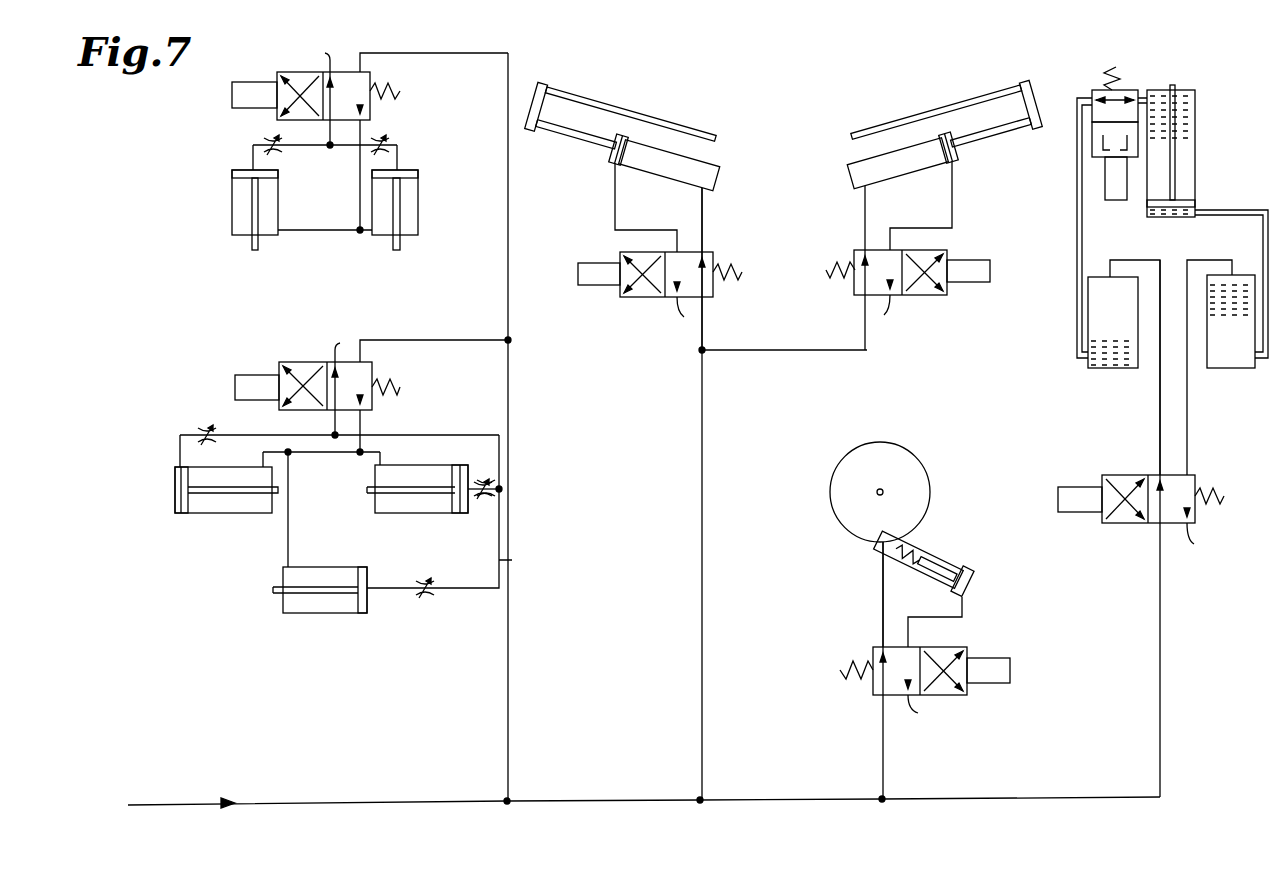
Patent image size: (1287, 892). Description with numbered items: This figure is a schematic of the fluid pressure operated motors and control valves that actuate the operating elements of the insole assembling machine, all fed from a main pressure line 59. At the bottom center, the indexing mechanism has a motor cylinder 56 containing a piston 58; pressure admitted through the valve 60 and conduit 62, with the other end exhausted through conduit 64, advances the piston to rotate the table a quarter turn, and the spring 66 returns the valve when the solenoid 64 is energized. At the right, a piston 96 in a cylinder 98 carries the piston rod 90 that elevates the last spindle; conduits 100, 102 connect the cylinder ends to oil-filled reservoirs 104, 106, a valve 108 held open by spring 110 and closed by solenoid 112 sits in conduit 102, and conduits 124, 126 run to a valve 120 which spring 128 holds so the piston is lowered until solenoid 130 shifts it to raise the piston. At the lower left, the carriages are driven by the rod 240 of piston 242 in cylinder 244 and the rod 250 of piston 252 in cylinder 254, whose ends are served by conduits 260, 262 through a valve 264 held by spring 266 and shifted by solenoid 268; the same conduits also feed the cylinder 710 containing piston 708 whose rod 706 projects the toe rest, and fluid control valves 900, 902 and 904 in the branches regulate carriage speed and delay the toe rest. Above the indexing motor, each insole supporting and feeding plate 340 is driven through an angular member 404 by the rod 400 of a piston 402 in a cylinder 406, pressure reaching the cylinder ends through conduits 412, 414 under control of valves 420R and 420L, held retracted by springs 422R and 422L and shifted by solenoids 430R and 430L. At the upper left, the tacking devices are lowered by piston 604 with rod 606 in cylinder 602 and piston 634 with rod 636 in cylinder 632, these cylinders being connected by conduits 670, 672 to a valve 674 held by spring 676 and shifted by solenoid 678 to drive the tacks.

The motor cylinder 56 is at (966, 517).
The piston 58 is at (978, 572).
The main pressure line 59 is at (508, 340).
The valve 60 is at (944, 697).
The conduit 62 is at (962, 615).
The conduit / solenoid 64 is at (1012, 668).
The spring 66 is at (840, 669).
The piston rod 90 is at (1176, 88).
The piston 96 is at (1190, 200).
The cylinder 98 is at (1195, 135).
The conduit 100 is at (1250, 216).
The conduit 102 is at (1077, 256).
The reservoir 104 is at (1236, 368).
The reservoir 106 is at (1112, 370).
The valve 108 is at (1097, 90).
The spring 110 is at (1118, 68).
The solenoid 112 is at (1115, 200).
The valve 120 is at (1129, 523).
The conduit 124 is at (1187, 437).
The conduit 126 is at (1160, 437).
The spring 128 is at (1220, 490).
The solenoid 130 is at (1060, 481).
The rod 240 is at (259, 513).
The piston 242 is at (176, 501).
The cylinder 244 is at (217, 515).
The rod 250 is at (418, 513).
The piston 252 is at (450, 503).
The cylinder 254 is at (454, 465).
The conduit 260 is at (437, 435).
The conduit 262 is at (321, 488).
The valve 264 is at (308, 362).
The spring 266 is at (400, 386).
The solenoid 268 is at (235, 388).
The insole supporting and feeding plate 340 is at (706, 131).
The rod 400 is at (566, 143).
The piston 402 is at (612, 158).
The angular member 404 is at (536, 84).
The cylinder 406 is at (672, 178).
The conduit 412 is at (615, 213).
The conduit 414 is at (702, 225).
The control valve 420R is at (660, 297).
The control valve 420L is at (922, 295).
The spring 422R is at (728, 282).
The spring 422L is at (838, 282).
The solenoid 430R is at (578, 288).
The solenoid 430L is at (972, 282).
The cylinder 602 is at (232, 207).
The piston 604 is at (232, 184).
The rod 606 is at (252, 240).
The cylinder 632 is at (418, 207).
The piston 634 is at (418, 178).
The piston rod 636 is at (400, 242).
The conduit 670 is at (280, 152).
The conduit 672 is at (292, 230).
The valve 674 is at (304, 72).
The spring 676 is at (400, 91).
The solenoid 678 is at (232, 95).
The rod 706 is at (276, 590).
The piston 708 is at (368, 610).
The cylinder 710 is at (325, 613).
The fluid control valve 900 is at (200, 430).
The fluid control valve 902 is at (488, 478).
The fluid control valve 904 is at (437, 581).